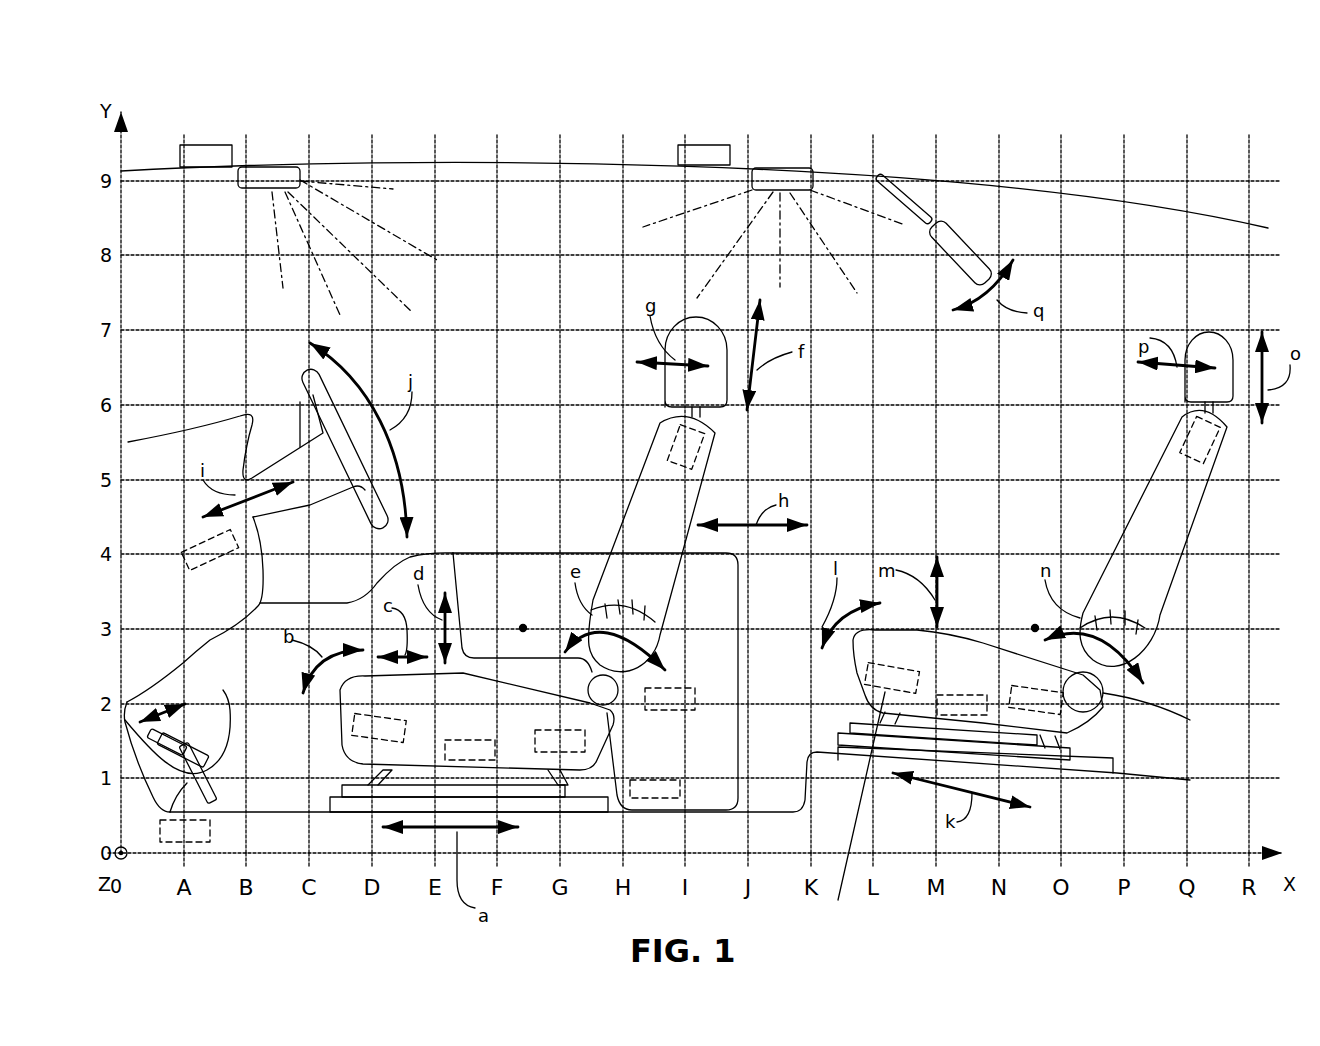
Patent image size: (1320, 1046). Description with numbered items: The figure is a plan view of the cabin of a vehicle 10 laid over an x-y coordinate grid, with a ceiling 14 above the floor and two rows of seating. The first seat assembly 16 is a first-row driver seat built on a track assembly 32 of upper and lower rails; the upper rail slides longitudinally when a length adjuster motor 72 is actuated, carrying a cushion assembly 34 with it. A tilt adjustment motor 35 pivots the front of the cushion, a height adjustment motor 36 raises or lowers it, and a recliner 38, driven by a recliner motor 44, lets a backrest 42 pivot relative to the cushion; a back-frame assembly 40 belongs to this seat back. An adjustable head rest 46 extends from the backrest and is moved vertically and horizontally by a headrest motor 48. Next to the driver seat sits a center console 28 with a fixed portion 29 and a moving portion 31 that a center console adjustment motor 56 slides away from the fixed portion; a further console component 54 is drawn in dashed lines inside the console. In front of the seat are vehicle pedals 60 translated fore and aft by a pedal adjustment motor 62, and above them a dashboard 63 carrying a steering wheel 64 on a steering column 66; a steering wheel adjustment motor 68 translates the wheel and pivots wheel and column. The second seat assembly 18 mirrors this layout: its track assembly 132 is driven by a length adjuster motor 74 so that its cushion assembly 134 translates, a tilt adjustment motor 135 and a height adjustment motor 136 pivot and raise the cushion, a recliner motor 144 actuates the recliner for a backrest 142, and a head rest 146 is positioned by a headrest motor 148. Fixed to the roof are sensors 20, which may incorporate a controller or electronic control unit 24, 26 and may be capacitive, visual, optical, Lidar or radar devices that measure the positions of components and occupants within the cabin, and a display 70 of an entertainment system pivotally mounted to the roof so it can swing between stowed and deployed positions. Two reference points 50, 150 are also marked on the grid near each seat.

The vehicle 10 is at (138, 88).
The ceiling 14 is at (612, 163).
The first seat assembly 16 is at (515, 373).
The second seat assembly 18 is at (1112, 390).
The sensor 20 is at (272, 167).
The controller 24 is at (205, 145).
The electronic control unit 26 is at (703, 145).
The center console 28 is at (540, 553).
The fixed portion 29 is at (285, 701).
The moving portion 31 is at (543, 602).
The track assembly 32 is at (530, 787).
The cushion assembly 34 is at (340, 735).
The tilt adjustment motor 35 is at (375, 717).
The height adjustment motor 36 is at (580, 730).
The recliner 38 is at (612, 698).
The back-frame assembly 40 is at (668, 613).
The backrest 42 is at (680, 563).
The recliner motor 44 is at (610, 647).
The head rest 46 is at (720, 342).
The headrest motor 48 is at (677, 467).
The reference point 50 is at (520, 628).
The console sensor 54 is at (647, 780).
The center console adjustment motor 56 is at (640, 697).
The vehicle pedals 60 is at (223, 723).
The pedal adjustment motor 62 is at (160, 832).
The dashboard 63 is at (165, 516).
The steering wheel 64 is at (305, 368).
The steering column 66 is at (300, 403).
The steering wheel adjustment motor 68 is at (185, 555).
The display 70 is at (970, 257).
The length adjuster motor 72 is at (453, 740).
The length adjuster motor 74 is at (937, 697).
The track assembly 132 is at (1043, 747).
The cushion assembly 134 is at (853, 663).
The tilt adjustment motor 135 is at (852, 810).
The height adjustment motor 136 is at (1060, 733).
The backrest 142 is at (1190, 565).
The recliner motor 144 is at (1120, 617).
The head rest 146 is at (1220, 333).
The headrest motor 148 is at (1193, 458).
The reference point 150 is at (1030, 627).